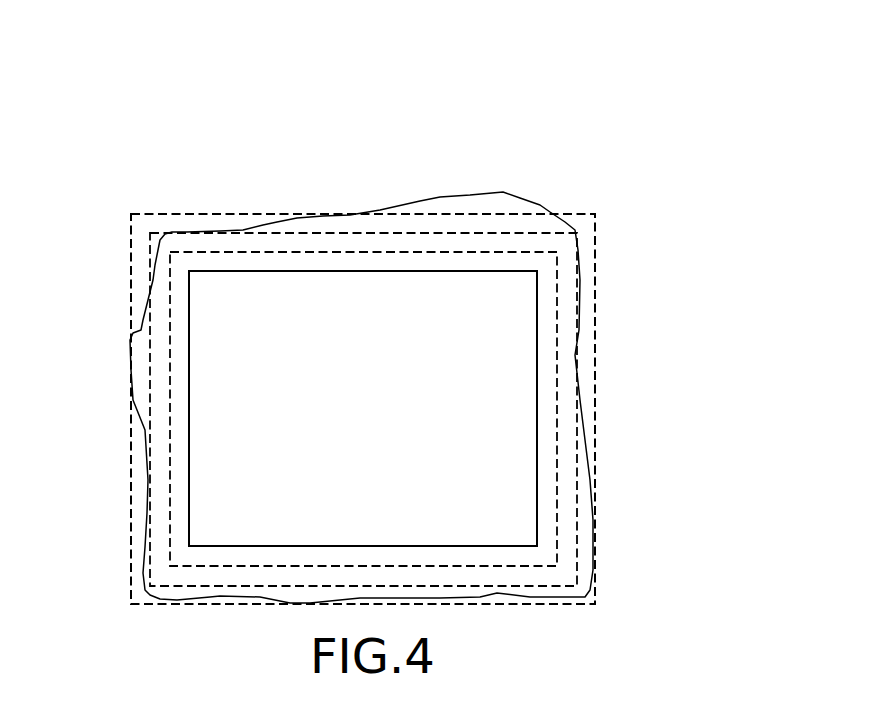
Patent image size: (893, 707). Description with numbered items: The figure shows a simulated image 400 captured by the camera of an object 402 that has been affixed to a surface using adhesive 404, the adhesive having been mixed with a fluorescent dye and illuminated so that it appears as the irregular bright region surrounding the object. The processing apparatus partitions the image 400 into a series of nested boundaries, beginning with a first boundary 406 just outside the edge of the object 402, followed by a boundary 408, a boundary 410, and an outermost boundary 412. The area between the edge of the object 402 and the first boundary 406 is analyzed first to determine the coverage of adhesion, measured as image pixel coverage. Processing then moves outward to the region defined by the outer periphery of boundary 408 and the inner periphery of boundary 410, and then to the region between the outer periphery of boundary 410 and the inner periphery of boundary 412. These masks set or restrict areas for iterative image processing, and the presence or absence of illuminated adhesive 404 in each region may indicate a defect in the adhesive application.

The simulated image 400 is at (389, 142).
The object 402 is at (387, 424).
The adhesive 404 is at (519, 186).
The first boundary 406 is at (183, 475).
The boundary 408 is at (163, 437).
The boundary 410 is at (143, 365).
The boundary 412 is at (170, 208).